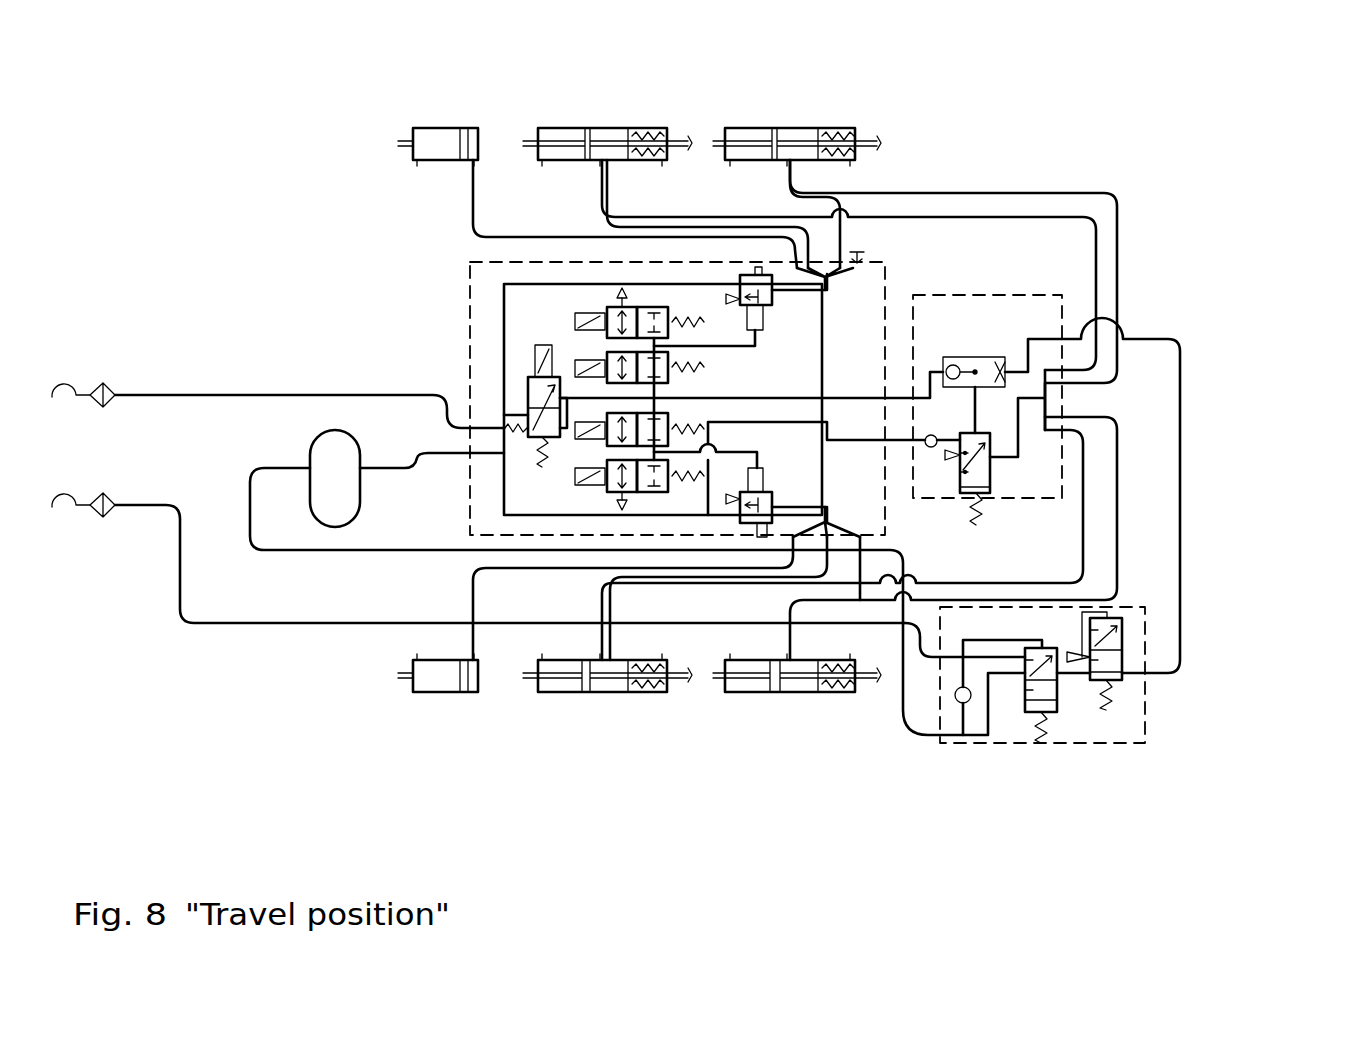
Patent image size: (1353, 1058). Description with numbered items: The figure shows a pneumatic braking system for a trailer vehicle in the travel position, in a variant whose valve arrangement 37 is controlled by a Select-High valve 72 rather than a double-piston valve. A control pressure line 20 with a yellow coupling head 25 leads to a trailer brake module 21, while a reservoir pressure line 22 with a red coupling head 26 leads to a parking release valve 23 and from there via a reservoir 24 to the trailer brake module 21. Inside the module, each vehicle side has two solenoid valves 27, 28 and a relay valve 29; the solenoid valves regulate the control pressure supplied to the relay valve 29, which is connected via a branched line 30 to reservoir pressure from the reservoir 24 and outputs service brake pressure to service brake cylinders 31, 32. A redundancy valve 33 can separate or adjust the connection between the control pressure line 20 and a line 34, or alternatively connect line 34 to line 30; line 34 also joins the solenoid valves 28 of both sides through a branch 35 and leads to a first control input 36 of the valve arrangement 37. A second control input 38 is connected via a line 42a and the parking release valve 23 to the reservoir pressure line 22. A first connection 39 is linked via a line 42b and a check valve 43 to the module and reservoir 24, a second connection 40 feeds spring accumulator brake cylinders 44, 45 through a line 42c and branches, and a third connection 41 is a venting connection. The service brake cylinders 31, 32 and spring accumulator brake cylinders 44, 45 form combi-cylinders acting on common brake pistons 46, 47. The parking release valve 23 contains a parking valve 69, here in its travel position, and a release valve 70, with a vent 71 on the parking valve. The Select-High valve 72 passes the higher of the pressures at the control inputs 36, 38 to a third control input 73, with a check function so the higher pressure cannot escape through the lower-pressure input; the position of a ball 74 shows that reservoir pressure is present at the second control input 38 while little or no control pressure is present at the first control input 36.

The control pressure line 20 is at (200, 393).
The trailer brake module 21 is at (470, 262).
The reservoir pressure line 22 is at (213, 627).
The parking release valve 23 is at (1125, 745).
The reservoir 24 is at (318, 508).
The yellow coupling head 25 is at (74, 384).
The red coupling head 26 is at (77, 538).
The solenoid valve 27 is at (605, 313).
The solenoid valve 28 is at (605, 360).
The relay valve 29 is at (740, 277).
The line 30 is at (390, 465).
The service brake cylinder 31 is at (587, 130).
The service brake cylinder 32 is at (782, 128).
The redundancy valve 33 is at (530, 392).
The line 34 is at (822, 385).
The branch 35 is at (752, 397).
The first control input 36 is at (938, 355).
The valve arrangement 37 is at (1010, 293).
The second control input 38 is at (1012, 292).
The first connection 39 is at (928, 437).
The second connection 40 is at (993, 473).
The third connection 41 is at (945, 467).
The line 42a is at (1182, 516).
The line 42b is at (790, 530).
The line 42c is at (1022, 418).
The check valve 43 is at (943, 455).
The spring accumulator brake cylinder 44 is at (608, 128).
The spring accumulator brake cylinder 45 is at (803, 130).
The brake piston 46 is at (530, 141).
The brake piston 47 is at (740, 141).
The parking valve 69 is at (1122, 660).
The release valve 70 is at (1023, 700).
The vent 71 is at (1075, 662).
The Select-High valve 72 is at (1000, 357).
The third control input 73 is at (1060, 372).
The ball 74 is at (955, 357).